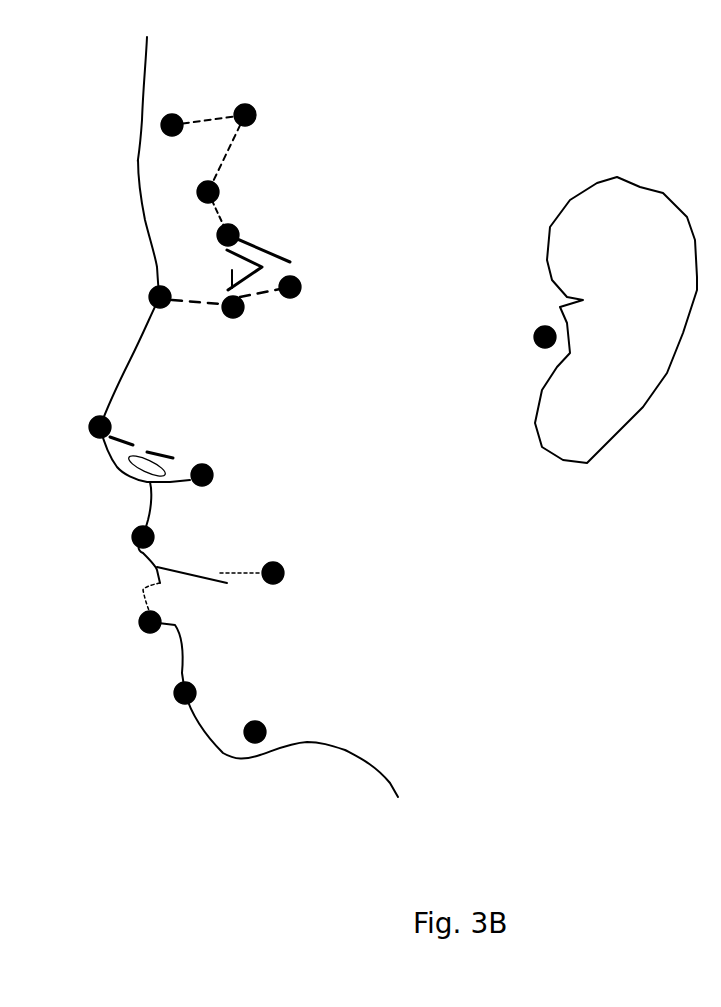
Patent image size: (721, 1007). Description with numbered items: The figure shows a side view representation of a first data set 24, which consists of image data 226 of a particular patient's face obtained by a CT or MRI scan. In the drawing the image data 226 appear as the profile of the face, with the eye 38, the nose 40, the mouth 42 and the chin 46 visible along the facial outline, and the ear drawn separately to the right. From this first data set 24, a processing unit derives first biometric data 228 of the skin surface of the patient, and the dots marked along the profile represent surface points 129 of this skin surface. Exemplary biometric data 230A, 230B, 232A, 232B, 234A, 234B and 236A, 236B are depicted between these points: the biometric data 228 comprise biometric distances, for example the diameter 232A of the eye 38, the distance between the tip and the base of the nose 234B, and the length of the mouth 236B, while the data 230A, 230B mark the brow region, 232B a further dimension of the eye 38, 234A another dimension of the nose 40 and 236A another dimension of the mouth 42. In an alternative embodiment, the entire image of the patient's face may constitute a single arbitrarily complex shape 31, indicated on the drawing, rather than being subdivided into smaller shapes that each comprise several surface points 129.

The first data set 24 is at (110, 90).
The image data 226 is at (133, 158).
The single arbitrarily complex shape 31 is at (532, 114).
The eye 38 is at (255, 265).
The nose 40 is at (137, 367).
The mouth 42 is at (147, 557).
The chin 46 is at (247, 800).
The surface points 129 is at (543, 332).
The first biometric data 228 is at (293, 53).
The biometric data 230A is at (233, 143).
The biometric data 230B is at (195, 117).
The diameter of the eye 232A is at (262, 248).
The biometric data 232B is at (253, 297).
The biometric data 234A is at (193, 483).
The distance between the tip and the base of the nose 234B is at (160, 450).
The biometric data 236A is at (160, 622).
The length of the mouth 236B is at (253, 587).